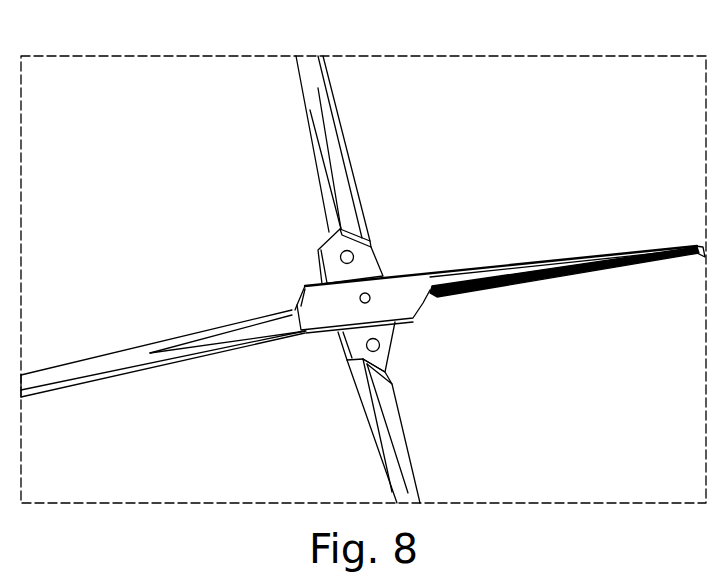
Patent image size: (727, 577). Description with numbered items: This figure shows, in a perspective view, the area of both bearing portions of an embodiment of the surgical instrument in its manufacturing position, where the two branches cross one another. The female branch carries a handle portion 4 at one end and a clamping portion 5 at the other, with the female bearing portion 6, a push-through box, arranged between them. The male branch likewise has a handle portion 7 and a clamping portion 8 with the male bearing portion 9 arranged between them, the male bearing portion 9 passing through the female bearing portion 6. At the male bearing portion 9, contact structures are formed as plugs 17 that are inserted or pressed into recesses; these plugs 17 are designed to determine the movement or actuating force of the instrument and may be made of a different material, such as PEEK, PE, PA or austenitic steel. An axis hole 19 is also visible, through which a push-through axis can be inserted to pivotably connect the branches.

The handle portion 4 is at (108, 360).
The clamping portion 5 is at (548, 278).
The female bearing portion 6 is at (348, 314).
The handle portion 7 is at (325, 82).
The clamping portion 8 is at (417, 483).
The male bearing portion 9 is at (333, 268).
The plugs 17 is at (354, 257).
The axis holes 19 is at (371, 297).